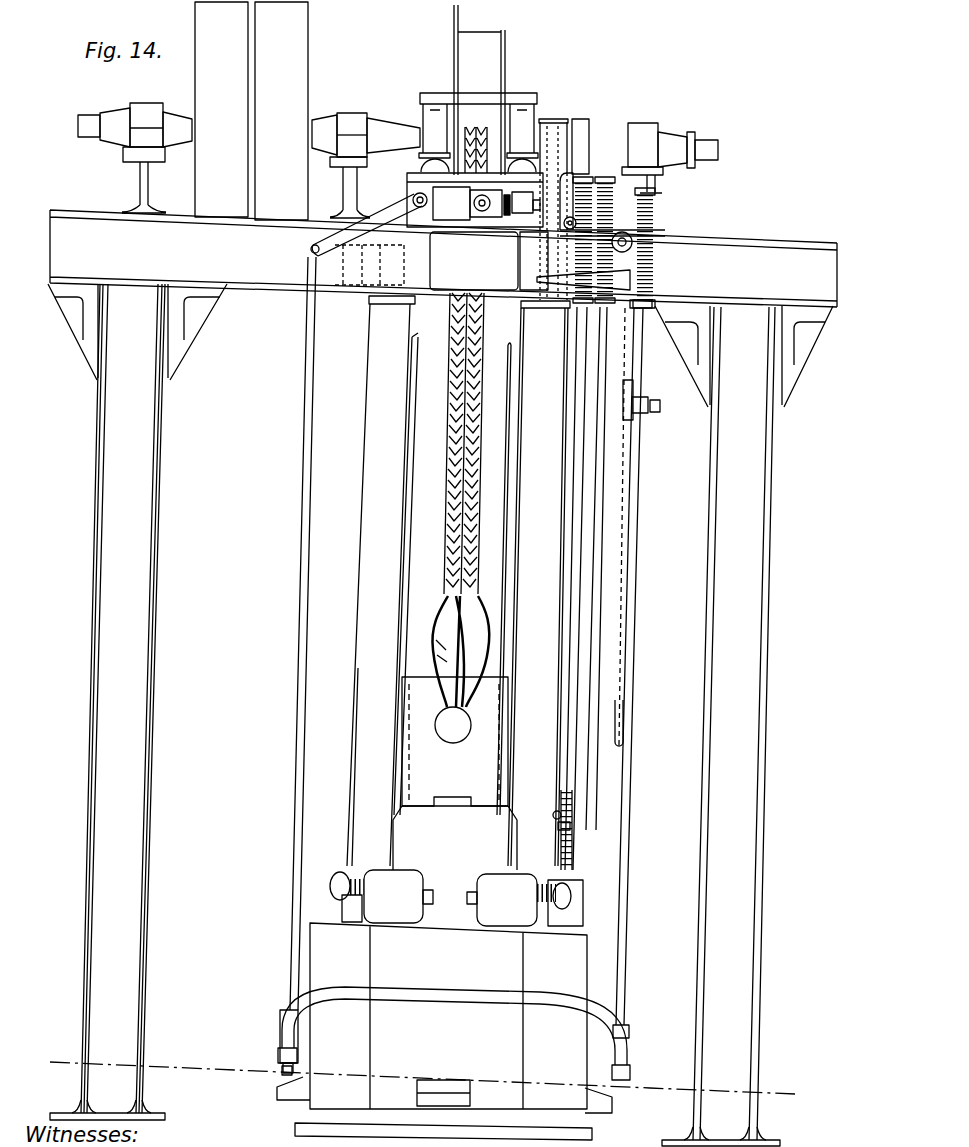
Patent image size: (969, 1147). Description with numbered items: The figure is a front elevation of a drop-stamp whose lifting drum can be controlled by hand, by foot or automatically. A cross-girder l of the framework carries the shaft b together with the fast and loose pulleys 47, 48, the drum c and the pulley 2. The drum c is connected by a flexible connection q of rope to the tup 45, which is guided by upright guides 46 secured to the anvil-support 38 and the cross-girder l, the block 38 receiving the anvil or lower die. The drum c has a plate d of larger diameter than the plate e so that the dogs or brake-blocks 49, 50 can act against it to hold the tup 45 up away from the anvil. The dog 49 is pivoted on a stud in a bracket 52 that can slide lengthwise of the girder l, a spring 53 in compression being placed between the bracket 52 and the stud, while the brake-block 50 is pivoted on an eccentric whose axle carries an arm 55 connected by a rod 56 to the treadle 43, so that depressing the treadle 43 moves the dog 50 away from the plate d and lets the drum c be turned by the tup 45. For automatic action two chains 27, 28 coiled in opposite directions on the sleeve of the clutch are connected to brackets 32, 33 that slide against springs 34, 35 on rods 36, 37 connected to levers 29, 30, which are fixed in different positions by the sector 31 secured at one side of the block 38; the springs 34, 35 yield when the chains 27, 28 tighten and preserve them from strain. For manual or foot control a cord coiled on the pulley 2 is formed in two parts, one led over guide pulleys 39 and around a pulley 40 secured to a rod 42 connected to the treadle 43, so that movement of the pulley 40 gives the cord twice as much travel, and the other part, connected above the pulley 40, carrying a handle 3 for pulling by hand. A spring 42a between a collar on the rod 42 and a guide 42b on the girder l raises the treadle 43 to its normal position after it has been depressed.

The shaft b is at (125, 158).
The loose pulley 48 is at (221, 109).
The fast pulley 47 is at (281, 111).
The plate of the drum d is at (453, 18).
The drum c is at (478, 102).
The plate of the drum e is at (506, 52).
The pulley 2 is at (600, 120).
The chain 27 is at (575, 112).
The chain 28 is at (582, 118).
The spring 34 is at (604, 170).
The brake-block 50 is at (420, 185).
The bracket 52 is at (404, 184).
The arm 55 is at (405, 205).
The dog 49 is at (480, 212).
The pulleys 39 is at (493, 248).
The spring 53 is at (474, 261).
The spring 35 is at (612, 240).
The spring 42a is at (656, 212).
The guide 42b is at (656, 298).
The cross-girder l is at (442, 308).
The rod 56 is at (296, 665).
The bracket 32 is at (542, 310).
The bracket 33 is at (626, 310).
The pulley 40 is at (645, 424).
The flexible connection q is at (450, 526).
The rod 36 is at (569, 516).
The rod 37 is at (605, 568).
The upright guides 46 is at (457, 581).
The handle 3 is at (628, 743).
The tup 45 is at (455, 773).
The lever 29 is at (553, 820).
The lever 30 is at (575, 827).
The sector 31 is at (589, 830).
The rod 42 is at (627, 815).
The block 38 is at (444, 1005).
The treadle 43 is at (452, 1001).